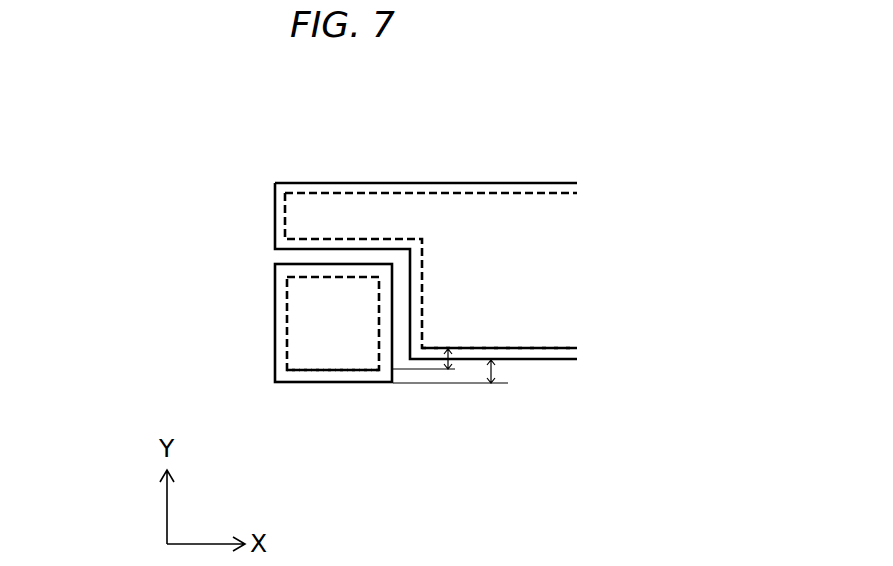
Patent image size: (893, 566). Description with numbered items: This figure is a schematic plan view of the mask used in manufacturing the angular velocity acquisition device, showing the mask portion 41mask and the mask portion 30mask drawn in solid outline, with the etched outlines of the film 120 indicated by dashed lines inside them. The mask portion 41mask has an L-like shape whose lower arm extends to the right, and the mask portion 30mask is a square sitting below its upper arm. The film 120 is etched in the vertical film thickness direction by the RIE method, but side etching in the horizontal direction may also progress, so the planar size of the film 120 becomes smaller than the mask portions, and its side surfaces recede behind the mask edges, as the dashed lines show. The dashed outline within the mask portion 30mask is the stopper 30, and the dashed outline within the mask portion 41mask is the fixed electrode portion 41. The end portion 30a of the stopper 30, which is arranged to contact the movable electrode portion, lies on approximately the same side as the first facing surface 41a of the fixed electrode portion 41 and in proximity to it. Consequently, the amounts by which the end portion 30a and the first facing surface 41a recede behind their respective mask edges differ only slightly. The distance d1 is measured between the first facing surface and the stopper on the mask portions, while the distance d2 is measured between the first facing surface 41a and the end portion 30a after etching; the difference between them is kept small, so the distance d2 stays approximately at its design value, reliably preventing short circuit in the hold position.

The film 120 is at (431, 212).
The stopper 30 is at (350, 308).
The fixed electrode portion 41 is at (472, 230).
The mask portion 41mask is at (275, 212).
The mask portion 30mask is at (275, 318).
The first facing surface 41a is at (555, 350).
The end portion 30a is at (347, 372).
The distance d1 is at (494, 372).
The distance d2 is at (450, 366).